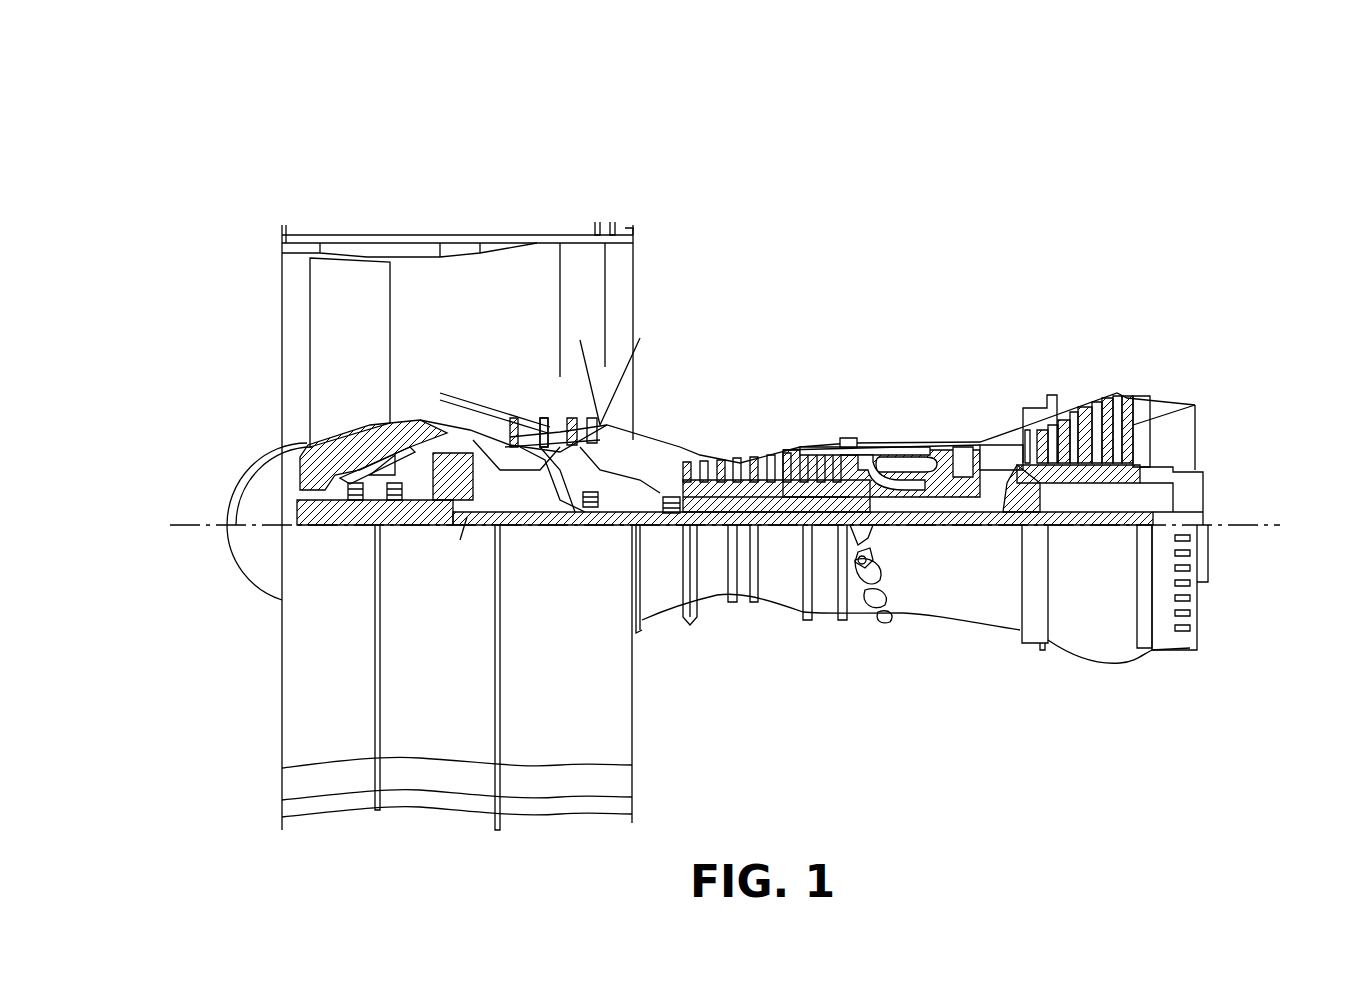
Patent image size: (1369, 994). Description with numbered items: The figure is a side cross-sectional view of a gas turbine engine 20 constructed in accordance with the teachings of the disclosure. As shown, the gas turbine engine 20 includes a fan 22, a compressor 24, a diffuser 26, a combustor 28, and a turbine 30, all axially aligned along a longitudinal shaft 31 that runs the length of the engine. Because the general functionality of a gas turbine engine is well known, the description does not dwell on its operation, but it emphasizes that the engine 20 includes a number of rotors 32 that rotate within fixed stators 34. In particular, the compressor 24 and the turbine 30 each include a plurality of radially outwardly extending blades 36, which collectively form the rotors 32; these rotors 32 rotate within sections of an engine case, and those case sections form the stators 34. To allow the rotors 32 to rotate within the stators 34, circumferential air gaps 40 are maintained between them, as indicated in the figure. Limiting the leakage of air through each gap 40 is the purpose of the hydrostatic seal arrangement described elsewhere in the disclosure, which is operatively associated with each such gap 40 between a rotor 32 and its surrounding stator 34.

The gas turbine engine 20 is at (1178, 257).
The fan 22 is at (332, 330).
The compressor 24 is at (650, 432).
The diffuser 26 is at (838, 432).
The combustor 28 is at (905, 432).
The turbine 30 is at (1028, 398).
The longitudinal shaft 31 is at (1157, 510).
The rotor 32 is at (597, 360).
The stator 34 is at (443, 652).
The blade 36 is at (1135, 425).
The circumferential air gap 40 is at (1110, 428).